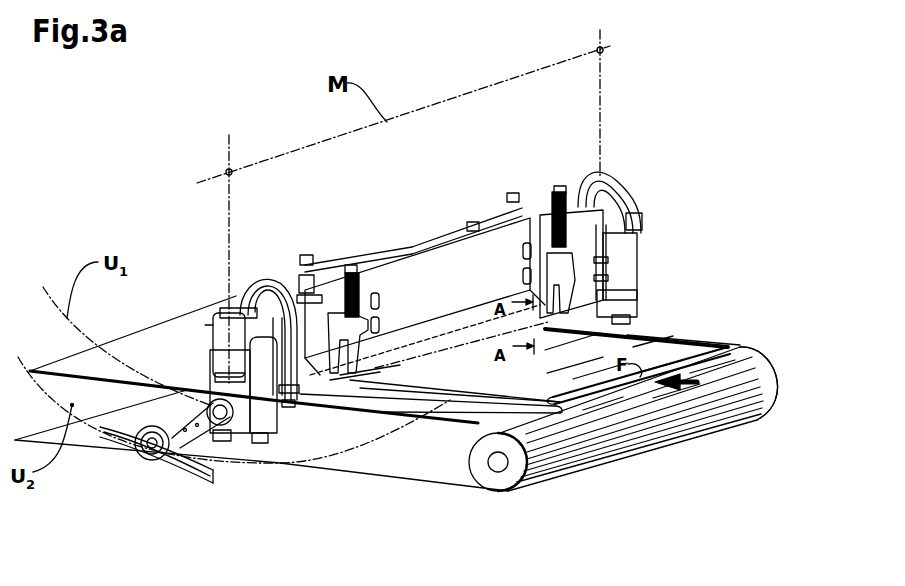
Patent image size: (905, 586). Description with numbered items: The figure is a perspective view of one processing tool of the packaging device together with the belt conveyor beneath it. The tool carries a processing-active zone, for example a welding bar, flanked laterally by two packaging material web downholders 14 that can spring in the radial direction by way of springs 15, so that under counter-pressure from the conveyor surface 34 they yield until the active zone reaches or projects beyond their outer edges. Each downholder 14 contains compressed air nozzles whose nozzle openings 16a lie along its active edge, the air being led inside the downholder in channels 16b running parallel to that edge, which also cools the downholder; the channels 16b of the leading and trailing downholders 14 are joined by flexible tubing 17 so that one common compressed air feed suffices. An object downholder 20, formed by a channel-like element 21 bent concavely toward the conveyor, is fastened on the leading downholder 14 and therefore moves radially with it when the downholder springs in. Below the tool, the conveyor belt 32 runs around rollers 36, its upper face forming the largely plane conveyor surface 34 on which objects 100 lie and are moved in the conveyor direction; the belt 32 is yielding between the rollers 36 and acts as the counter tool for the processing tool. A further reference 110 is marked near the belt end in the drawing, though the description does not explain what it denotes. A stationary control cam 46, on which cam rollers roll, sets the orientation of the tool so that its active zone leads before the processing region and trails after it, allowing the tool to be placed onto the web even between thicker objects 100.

The packaging material web downholder 14 is at (310, 382).
The spring 15 is at (378, 268).
The nozzle opening 16a is at (367, 373).
The channel 16b is at (378, 372).
The flexible tubing 17 is at (266, 282).
The object downholder 20 is at (645, 295).
The element 21 is at (387, 373).
The conveyor belt 32 is at (460, 490).
The conveyor surface 34 is at (178, 330).
The roller 36 is at (518, 472).
The control cam 46 is at (180, 478).
The object 100 is at (643, 343).
The belt end 110 is at (740, 345).